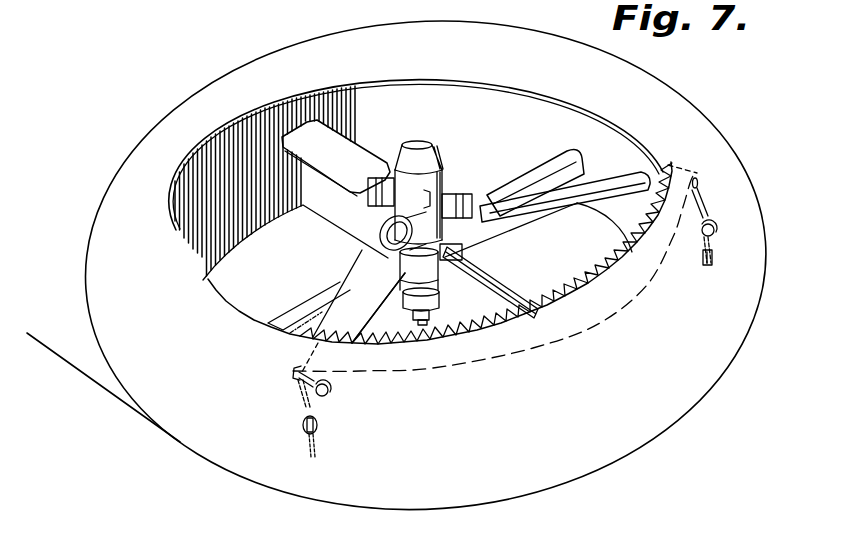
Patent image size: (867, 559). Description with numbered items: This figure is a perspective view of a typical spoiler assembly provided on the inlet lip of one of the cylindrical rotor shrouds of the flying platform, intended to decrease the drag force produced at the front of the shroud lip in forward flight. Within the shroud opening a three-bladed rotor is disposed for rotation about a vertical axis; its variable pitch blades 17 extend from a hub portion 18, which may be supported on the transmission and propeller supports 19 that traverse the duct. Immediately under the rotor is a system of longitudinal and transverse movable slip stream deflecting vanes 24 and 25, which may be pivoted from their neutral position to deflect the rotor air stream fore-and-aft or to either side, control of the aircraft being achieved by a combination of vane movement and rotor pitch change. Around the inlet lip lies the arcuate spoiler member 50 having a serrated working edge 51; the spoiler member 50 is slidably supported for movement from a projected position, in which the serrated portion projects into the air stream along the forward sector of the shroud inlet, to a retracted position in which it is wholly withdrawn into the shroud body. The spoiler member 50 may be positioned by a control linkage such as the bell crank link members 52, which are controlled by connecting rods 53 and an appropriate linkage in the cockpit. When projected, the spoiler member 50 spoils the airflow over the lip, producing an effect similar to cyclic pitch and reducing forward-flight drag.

The variable pitch blades 17 is at (350, 144).
The hub portion 18 is at (441, 162).
The transmission and propeller supports 19 is at (548, 166).
The longitudinal slip stream deflecting vanes 24 is at (478, 307).
The transverse slip stream deflecting vanes 25 is at (518, 228).
The arcuate spoiler member 50 is at (541, 311).
The serrated working edge 51 is at (582, 288).
The bell crank link members 52 is at (318, 410).
The connecting rods 53 is at (317, 447).